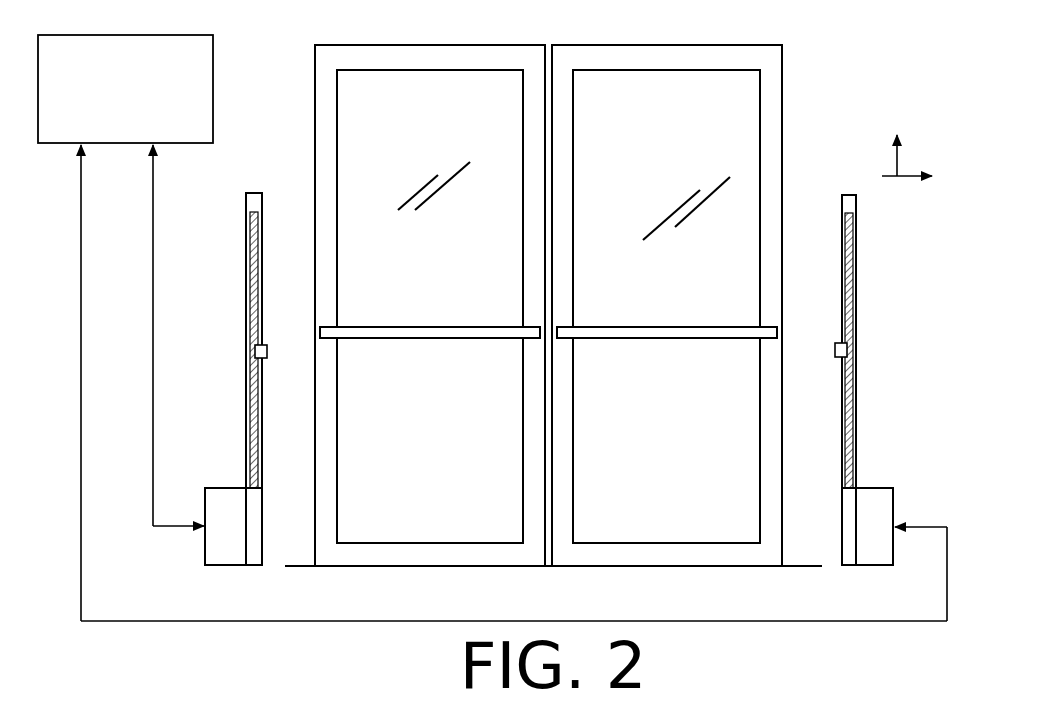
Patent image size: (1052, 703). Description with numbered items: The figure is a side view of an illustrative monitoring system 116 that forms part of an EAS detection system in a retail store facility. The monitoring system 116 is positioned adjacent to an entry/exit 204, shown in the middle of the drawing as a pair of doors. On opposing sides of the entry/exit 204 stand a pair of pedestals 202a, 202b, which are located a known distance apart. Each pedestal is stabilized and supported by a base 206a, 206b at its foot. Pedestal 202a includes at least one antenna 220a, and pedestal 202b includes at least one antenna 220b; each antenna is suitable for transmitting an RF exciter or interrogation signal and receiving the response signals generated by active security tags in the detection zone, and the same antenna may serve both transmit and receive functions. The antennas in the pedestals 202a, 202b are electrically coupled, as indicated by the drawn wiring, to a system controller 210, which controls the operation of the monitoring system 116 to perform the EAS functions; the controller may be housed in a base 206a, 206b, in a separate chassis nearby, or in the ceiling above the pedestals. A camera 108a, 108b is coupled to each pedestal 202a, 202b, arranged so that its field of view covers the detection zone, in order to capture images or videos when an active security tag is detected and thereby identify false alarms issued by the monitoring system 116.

The monitoring system 116 is at (860, 80).
The system controller 210 is at (125, 89).
The entry/exit 204 is at (782, 146).
The pedestal 202a is at (246, 334).
The pedestal 202b is at (857, 319).
The antenna 220a is at (262, 393).
The antenna 220b is at (841, 311).
The camera 108a is at (256, 353).
The camera 108b is at (848, 352).
The base 206a is at (232, 488).
The base 206b is at (878, 488).